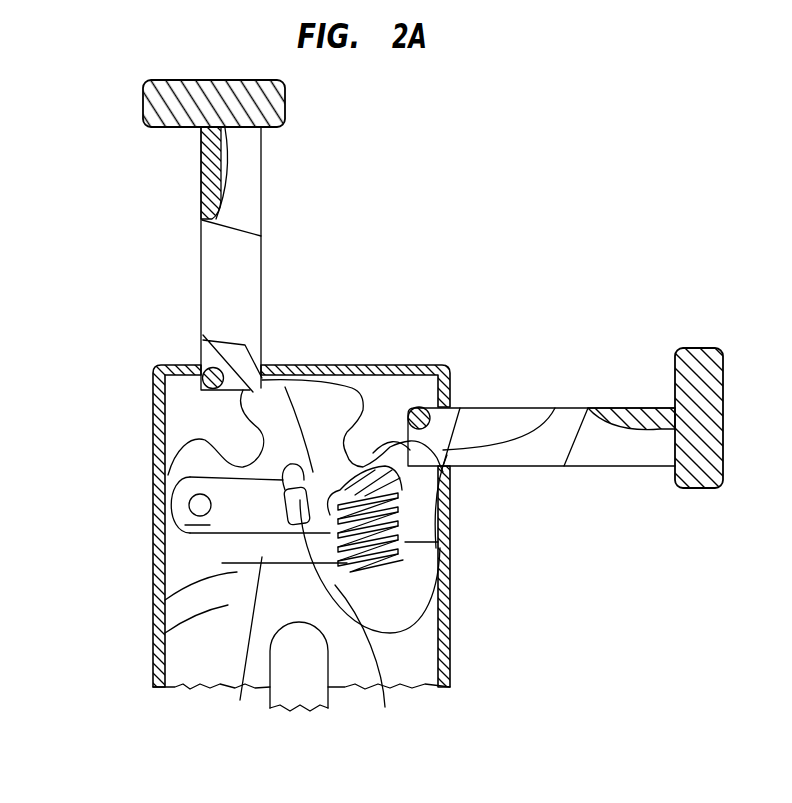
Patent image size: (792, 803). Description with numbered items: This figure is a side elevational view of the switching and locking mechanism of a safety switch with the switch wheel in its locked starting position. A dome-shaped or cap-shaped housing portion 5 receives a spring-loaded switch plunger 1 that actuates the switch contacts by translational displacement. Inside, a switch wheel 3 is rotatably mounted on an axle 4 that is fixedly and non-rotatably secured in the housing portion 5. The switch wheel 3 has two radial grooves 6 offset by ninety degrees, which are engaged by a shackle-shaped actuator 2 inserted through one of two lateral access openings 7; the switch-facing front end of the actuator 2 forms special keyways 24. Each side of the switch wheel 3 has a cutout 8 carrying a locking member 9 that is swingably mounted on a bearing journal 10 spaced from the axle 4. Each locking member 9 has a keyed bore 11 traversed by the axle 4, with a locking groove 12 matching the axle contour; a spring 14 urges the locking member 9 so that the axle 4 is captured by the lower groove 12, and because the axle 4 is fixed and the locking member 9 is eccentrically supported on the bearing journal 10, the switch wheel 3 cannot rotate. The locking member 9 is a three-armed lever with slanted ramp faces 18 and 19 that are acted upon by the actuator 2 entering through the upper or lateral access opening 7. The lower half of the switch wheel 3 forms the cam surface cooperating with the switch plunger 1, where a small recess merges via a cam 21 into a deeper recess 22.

The switch plunger 1 is at (290, 695).
The actuator 2 is at (283, 98).
The switch wheel 3 is at (387, 590).
The axle 4 is at (283, 490).
The housing portion 5 is at (400, 365).
The radial groove 6 is at (233, 440).
The access opening 7 is at (457, 407).
The cutout 8 is at (240, 700).
The locking member 9 is at (153, 552).
The bearing journal 10 is at (189, 505).
The keyed bore 11 is at (283, 478).
The locking groove 12 is at (385, 707).
The spring 14 is at (400, 546).
The ramp face 18 is at (202, 365).
The ramp face 19 is at (445, 470).
The cam 21 is at (153, 660).
The recess 22 is at (165, 600).
The keyway 24 is at (245, 357).